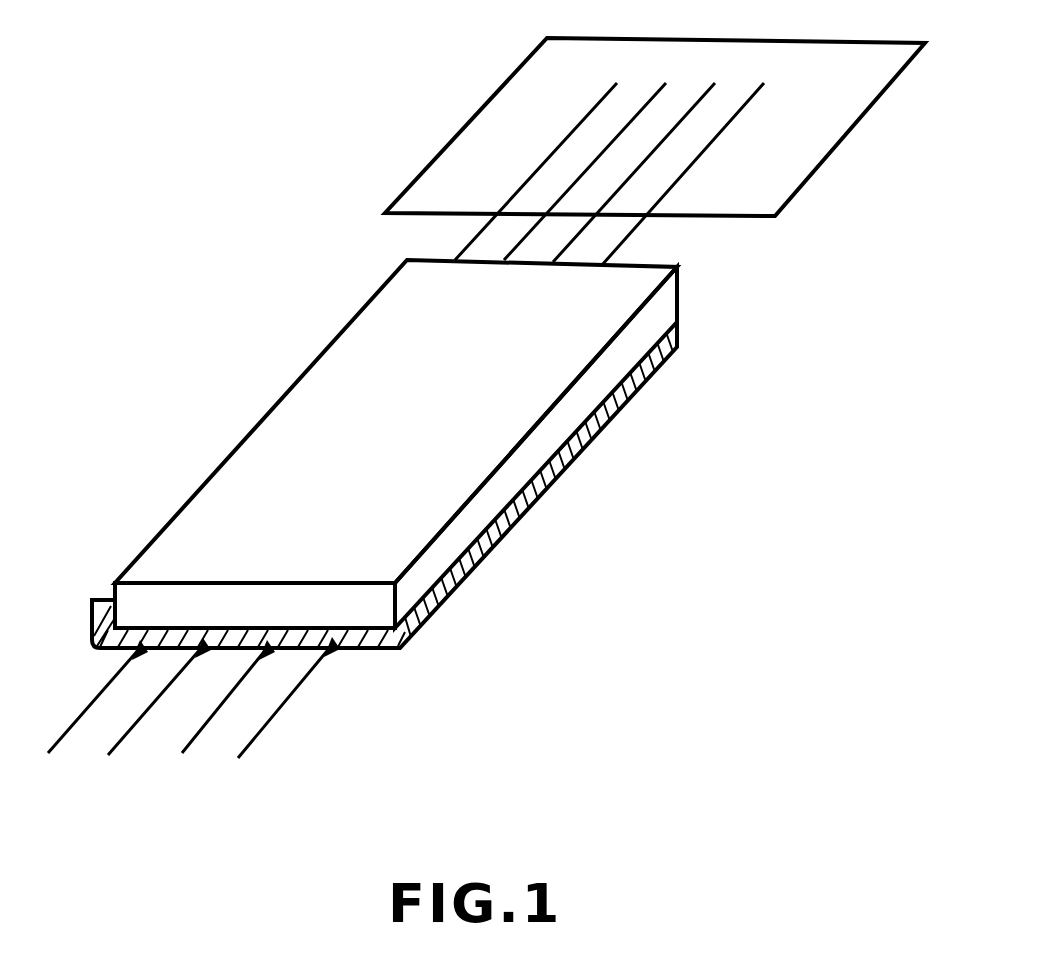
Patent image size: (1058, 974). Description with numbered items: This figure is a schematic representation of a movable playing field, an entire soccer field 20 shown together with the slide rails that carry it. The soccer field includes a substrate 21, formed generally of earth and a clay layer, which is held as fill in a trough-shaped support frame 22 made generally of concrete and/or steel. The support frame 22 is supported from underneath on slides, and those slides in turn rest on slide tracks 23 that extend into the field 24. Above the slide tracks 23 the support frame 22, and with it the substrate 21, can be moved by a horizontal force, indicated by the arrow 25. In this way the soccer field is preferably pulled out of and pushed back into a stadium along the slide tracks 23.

The liquid crystal panel 20 is at (367, 395).
The substrate 21 is at (593, 385).
The support frame 22 is at (513, 517).
The slide tracks 23 is at (620, 241).
The field 24 is at (533, 108).
The arrow 25 is at (277, 712).